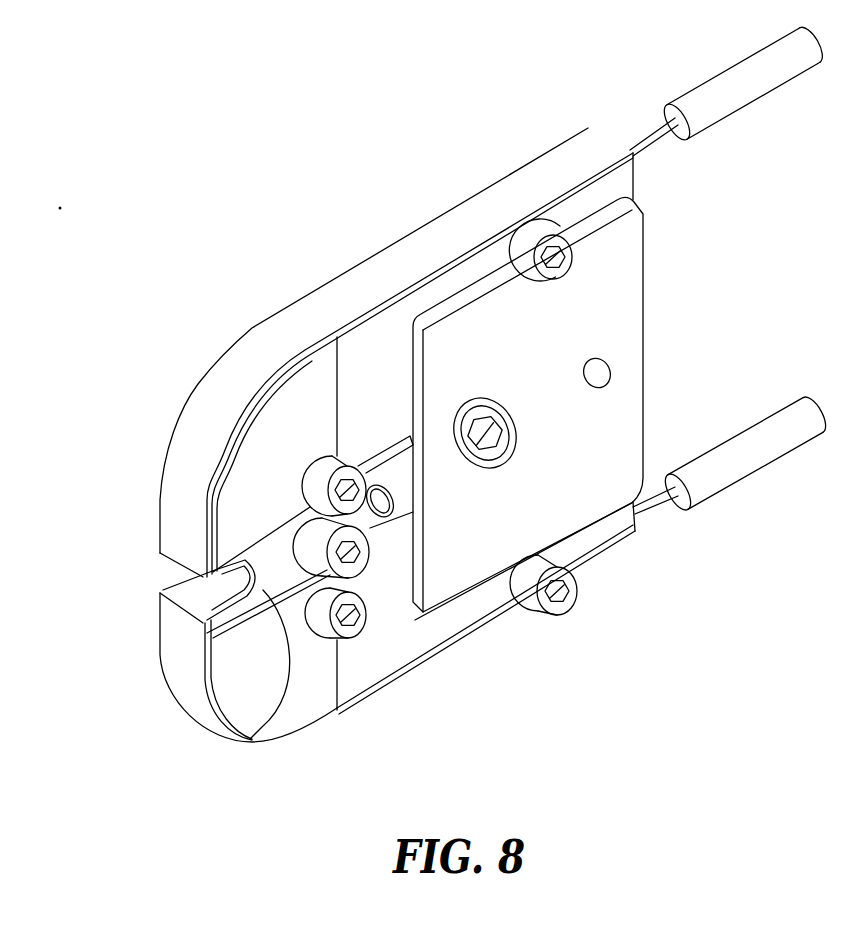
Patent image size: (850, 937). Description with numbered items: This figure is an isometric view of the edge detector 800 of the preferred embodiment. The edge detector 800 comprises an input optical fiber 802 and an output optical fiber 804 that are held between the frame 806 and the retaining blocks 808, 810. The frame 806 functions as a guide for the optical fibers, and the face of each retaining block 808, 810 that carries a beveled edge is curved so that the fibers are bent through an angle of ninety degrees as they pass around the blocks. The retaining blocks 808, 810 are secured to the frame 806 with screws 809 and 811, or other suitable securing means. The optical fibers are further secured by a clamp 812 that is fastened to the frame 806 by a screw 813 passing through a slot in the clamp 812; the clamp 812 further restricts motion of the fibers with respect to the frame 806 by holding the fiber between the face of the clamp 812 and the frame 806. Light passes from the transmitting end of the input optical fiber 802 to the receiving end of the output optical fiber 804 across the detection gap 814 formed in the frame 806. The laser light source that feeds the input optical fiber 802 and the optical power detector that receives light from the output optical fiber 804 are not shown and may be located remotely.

The edge detector 800 is at (640, 757).
The input optical fiber 802 is at (763, 51).
The output optical fiber 804 is at (764, 424).
The frame 806 is at (425, 628).
The retaining block 808 is at (240, 477).
The screw 809 is at (327, 467).
The retaining block 810 is at (297, 692).
The screw 811 is at (357, 617).
The clamp 812 is at (250, 738).
The screw 813 is at (368, 556).
The detection gap 814 is at (172, 592).